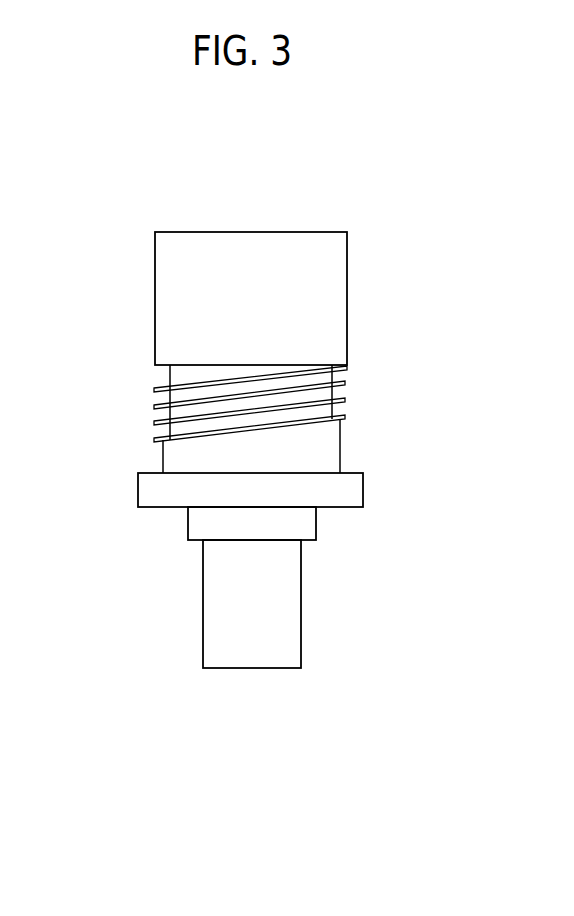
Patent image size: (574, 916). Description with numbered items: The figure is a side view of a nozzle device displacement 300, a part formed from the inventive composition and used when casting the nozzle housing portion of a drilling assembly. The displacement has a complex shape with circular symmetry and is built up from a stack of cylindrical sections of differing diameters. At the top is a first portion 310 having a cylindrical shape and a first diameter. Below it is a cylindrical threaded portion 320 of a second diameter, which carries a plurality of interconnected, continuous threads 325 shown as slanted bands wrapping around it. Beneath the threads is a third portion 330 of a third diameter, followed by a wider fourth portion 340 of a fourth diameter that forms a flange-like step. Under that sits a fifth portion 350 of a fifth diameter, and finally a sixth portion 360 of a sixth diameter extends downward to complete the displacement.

The nozzle device displacement 300 is at (236, 704).
The first portion 310 is at (338, 281).
The cylindrical threaded portion 320 is at (246, 404).
The threads 325 is at (358, 389).
The third portion 330 is at (333, 447).
The fourth portion 340 is at (352, 490).
The fifth portion 350 is at (310, 527).
The sixth portion 360 is at (290, 583).